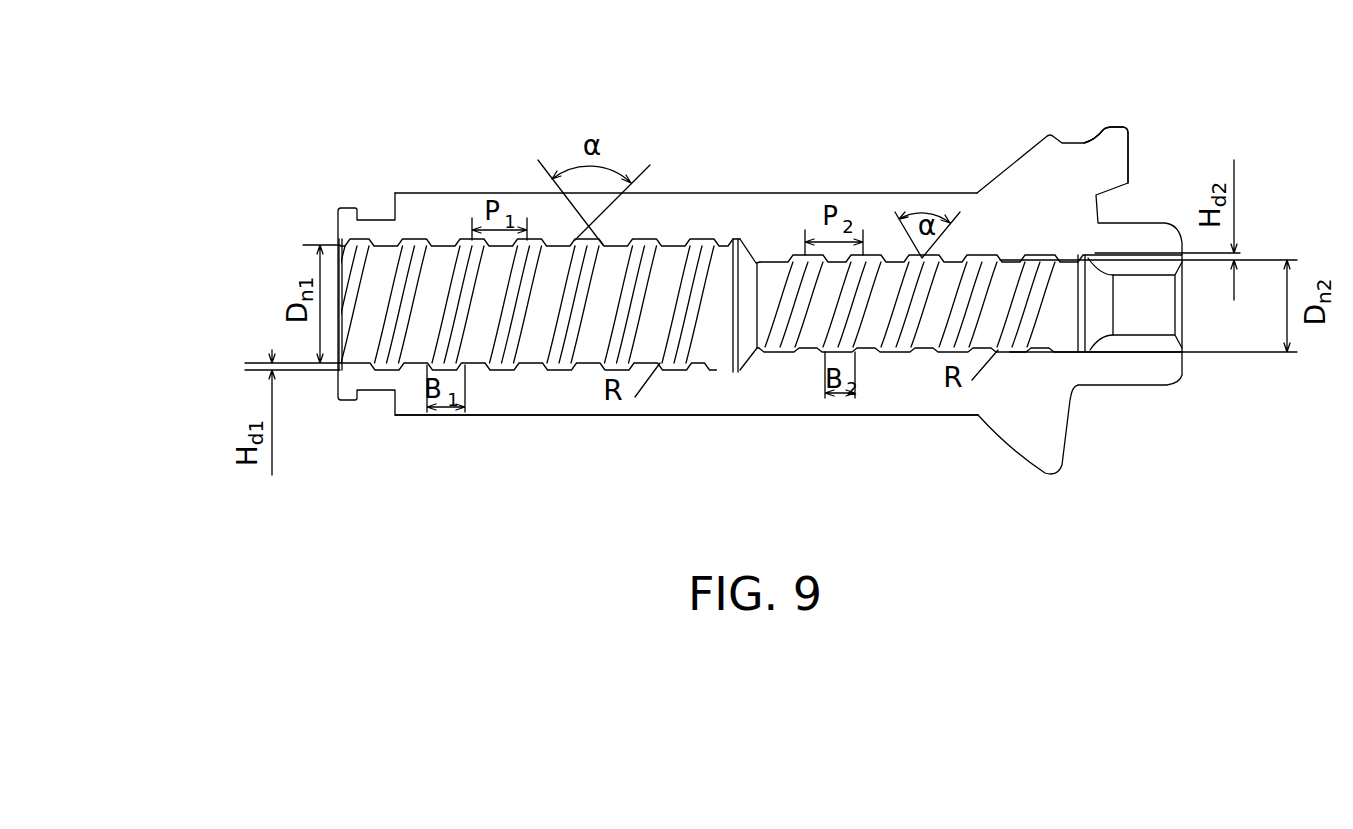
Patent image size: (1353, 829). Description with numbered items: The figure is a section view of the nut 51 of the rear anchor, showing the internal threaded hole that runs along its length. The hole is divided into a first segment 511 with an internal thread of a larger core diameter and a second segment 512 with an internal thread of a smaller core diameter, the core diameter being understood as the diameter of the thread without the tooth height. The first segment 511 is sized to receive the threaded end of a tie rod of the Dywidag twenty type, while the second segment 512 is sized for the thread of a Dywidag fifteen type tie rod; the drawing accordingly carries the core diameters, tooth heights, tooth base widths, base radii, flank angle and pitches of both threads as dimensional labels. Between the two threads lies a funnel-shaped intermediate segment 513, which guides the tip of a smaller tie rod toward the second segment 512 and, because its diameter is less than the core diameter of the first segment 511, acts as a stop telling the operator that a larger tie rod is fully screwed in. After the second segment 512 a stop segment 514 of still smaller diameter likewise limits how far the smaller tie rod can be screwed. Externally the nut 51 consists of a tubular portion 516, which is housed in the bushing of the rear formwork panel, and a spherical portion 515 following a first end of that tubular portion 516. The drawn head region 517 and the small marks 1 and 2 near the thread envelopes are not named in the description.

The nut 51 is at (1080, 81).
The first segment 511 is at (562, 367).
The second segment 512 is at (923, 350).
The intermediate segment 513 is at (748, 367).
The stop segment 514 is at (1147, 328).
The spherical portion 515 is at (1055, 198).
The tubular portion 516 is at (687, 220).
The head flange 517 is at (1118, 157).
The first region 1 is at (577, 434).
The second region 2 is at (869, 426).